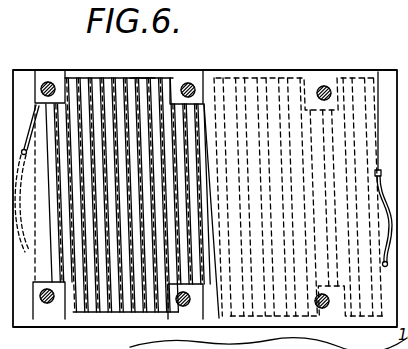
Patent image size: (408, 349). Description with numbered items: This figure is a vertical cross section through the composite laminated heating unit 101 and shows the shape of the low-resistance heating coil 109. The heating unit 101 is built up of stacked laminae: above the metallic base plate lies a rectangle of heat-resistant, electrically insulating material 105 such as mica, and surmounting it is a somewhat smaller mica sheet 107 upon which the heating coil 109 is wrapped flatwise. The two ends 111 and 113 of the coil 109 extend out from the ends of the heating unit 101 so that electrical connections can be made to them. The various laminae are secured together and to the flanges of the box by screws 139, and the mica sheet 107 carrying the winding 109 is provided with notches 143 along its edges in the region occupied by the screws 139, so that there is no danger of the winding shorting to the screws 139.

The composite laminated heating unit 101 is at (288, 71).
The heat-resistant electrically insulating material 105 is at (208, 75).
The mica sheet 107 is at (83, 83).
The low-resistance heating coil 109 is at (150, 76).
The end of the coil 111 is at (28, 191).
The end of the coil 113 is at (386, 235).
The screws 139 is at (47, 81).
The notches 143 is at (62, 82).